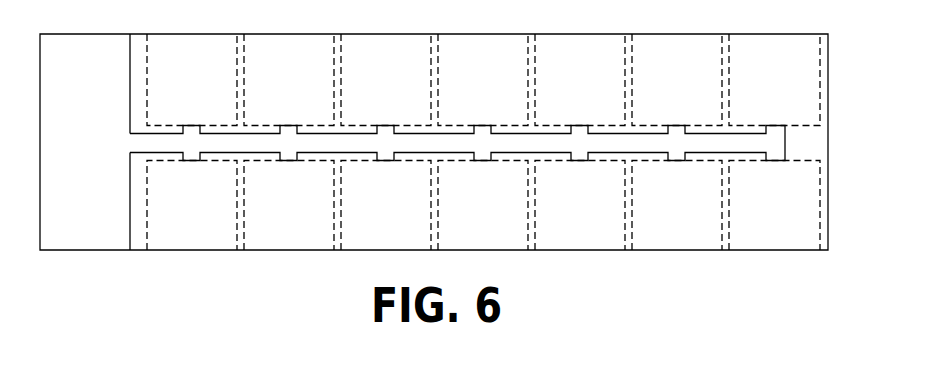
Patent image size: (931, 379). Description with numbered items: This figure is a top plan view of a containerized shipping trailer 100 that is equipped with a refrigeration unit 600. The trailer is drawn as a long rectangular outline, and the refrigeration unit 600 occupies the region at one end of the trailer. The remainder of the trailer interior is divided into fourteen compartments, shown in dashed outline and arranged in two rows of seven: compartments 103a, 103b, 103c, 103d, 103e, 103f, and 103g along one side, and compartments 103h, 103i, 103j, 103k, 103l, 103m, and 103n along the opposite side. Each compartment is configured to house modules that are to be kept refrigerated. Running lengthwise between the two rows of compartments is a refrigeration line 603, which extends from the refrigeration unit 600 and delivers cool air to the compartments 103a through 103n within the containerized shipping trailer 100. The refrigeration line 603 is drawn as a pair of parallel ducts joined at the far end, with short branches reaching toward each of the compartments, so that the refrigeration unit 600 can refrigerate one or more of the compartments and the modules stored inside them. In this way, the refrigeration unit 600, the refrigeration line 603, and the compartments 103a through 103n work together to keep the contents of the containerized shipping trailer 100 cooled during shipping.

The containerized shipping trailer 100 is at (742, 250).
The refrigeration unit 600 is at (72, 200).
The refrigeration line 603 is at (161, 141).
The compartment 103a is at (175, 84).
The compartment 103b is at (272, 84).
The compartment 103c is at (369, 84).
The compartment 103d is at (466, 84).
The compartment 103e is at (563, 84).
The compartment 103f is at (662, 84).
The compartment 103g is at (758, 84).
The compartment 103h is at (175, 216).
The compartment 103i is at (274, 216).
The compartment 103j is at (371, 216).
The compartment 103k is at (466, 216).
The compartment 103l is at (565, 216).
The compartment 103m is at (658, 216).
The compartment 103n is at (758, 216).